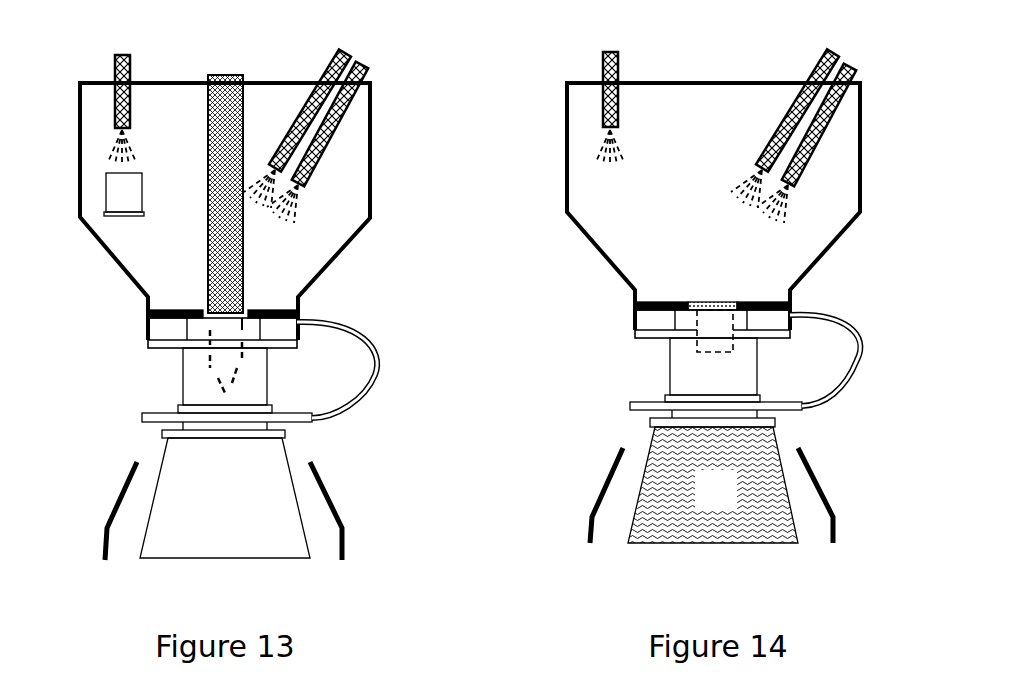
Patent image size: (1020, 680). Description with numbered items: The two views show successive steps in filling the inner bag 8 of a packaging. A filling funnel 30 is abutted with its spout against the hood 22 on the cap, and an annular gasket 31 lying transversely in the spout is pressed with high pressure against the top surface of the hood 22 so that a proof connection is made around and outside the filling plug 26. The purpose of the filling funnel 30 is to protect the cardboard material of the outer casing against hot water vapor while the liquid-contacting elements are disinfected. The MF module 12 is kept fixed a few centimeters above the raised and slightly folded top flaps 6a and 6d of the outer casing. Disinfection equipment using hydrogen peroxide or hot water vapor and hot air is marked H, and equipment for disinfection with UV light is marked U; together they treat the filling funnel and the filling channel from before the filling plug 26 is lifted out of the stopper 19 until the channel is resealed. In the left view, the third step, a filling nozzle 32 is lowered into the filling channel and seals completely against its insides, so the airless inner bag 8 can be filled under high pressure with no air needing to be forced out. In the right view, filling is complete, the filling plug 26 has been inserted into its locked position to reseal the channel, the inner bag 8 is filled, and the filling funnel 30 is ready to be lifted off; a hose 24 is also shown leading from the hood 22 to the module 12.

In FIG. 13, the hot water vapor / hydrogen peroxide disinfection equipment H is at (113, 68).
In FIG. 14, the hot water vapor / hydrogen peroxide disinfection equipment H is at (601, 66).
In FIG. 13, the UV disinfection equipment U is at (360, 66).
In FIG. 14, the UV disinfection equipment U is at (850, 68).
In FIG. 13, the filling nozzle 32 is at (222, 75).
In FIG. 13, the filling plug 26 is at (106, 192).
In FIG. 14, the filling plug 26 is at (710, 303).
In FIG. 13, the filling funnel 30 is at (352, 248).
In FIG. 14, the filling funnel 30 is at (818, 266).
In FIG. 13, the annular gasket 31 is at (173, 312).
In FIG. 14, the annular gasket 31 is at (655, 303).
In FIG. 13, the hood 22 is at (146, 328).
In FIG. 14, the hood 22 is at (633, 320).
In FIG. 13, the stopper 19 is at (149, 375).
In FIG. 14, the stopper 19 is at (637, 373).
In FIG. 13, the MF module 12 is at (124, 433).
In FIG. 14, the MF module 12 is at (611, 421).
In FIG. 13, the conduit / hose 24 is at (370, 385).
In FIG. 14, the conduit / hose 24 is at (838, 393).
In FIG. 13, the inner bag 8 is at (225, 498).
In FIG. 14, the inner bag 8 is at (713, 485).
In FIG. 13, the top flap 6a is at (103, 546).
In FIG. 14, the top flap 6a is at (589, 522).
In FIG. 13, the top flap 6d is at (335, 491).
In FIG. 14, the top flap 6d is at (825, 479).